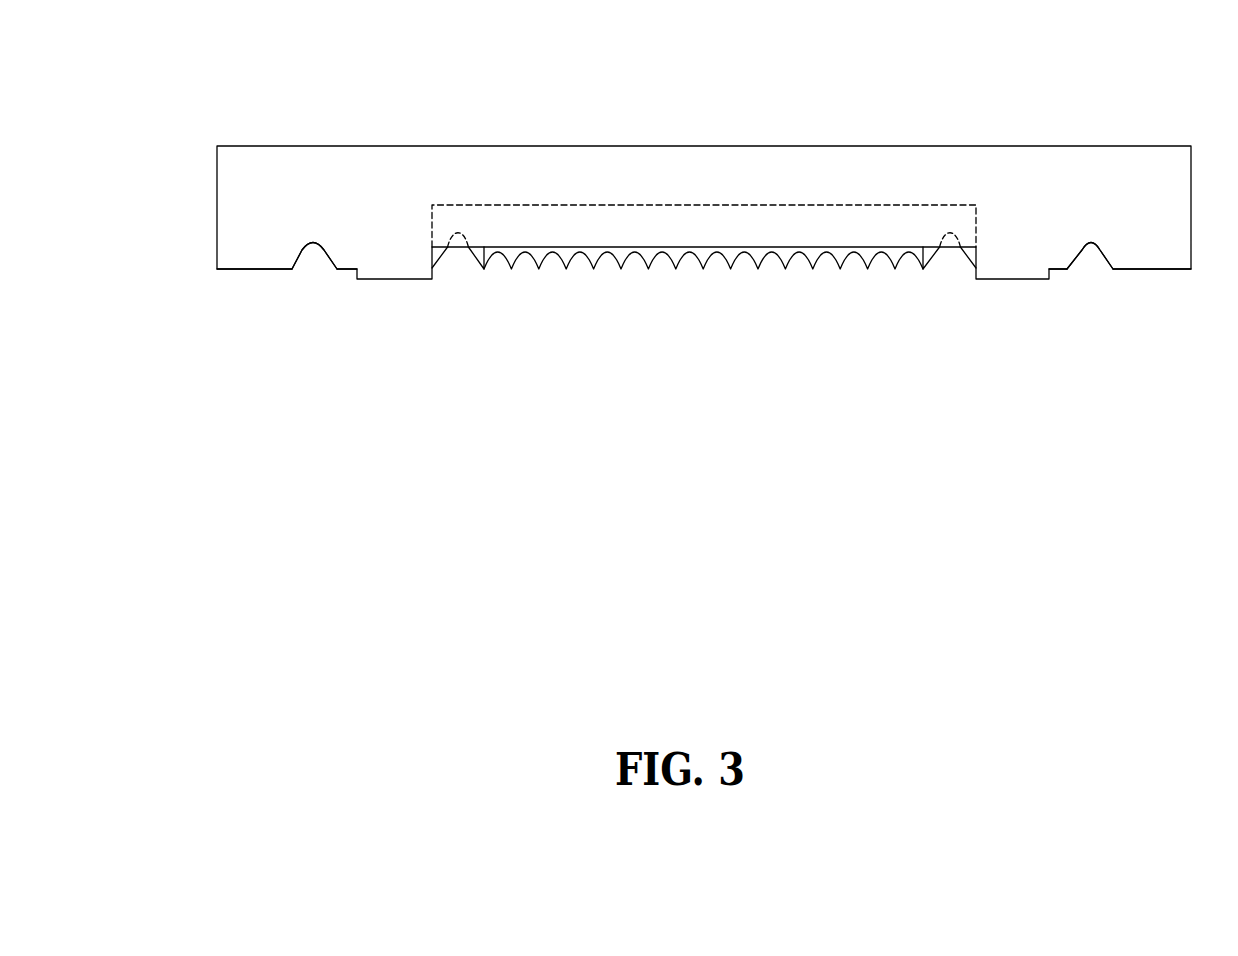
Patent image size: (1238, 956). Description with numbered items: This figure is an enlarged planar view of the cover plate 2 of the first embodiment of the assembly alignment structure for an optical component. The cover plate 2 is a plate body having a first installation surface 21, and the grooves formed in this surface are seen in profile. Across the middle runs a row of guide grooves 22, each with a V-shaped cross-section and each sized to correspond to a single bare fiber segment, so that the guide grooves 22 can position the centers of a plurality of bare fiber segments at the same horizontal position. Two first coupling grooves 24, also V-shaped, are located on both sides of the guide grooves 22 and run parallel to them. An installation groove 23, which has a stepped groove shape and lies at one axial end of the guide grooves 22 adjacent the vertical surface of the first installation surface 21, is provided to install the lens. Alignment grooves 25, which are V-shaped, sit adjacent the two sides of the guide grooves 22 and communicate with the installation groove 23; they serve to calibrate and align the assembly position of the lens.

The cover plate 2 is at (273, 210).
The first installation surface 21 is at (253, 268).
The guide groove 22 is at (581, 263).
The installation groove 23 is at (704, 205).
The first coupling groove 24 is at (312, 252).
The alignment groove 25 is at (458, 260).